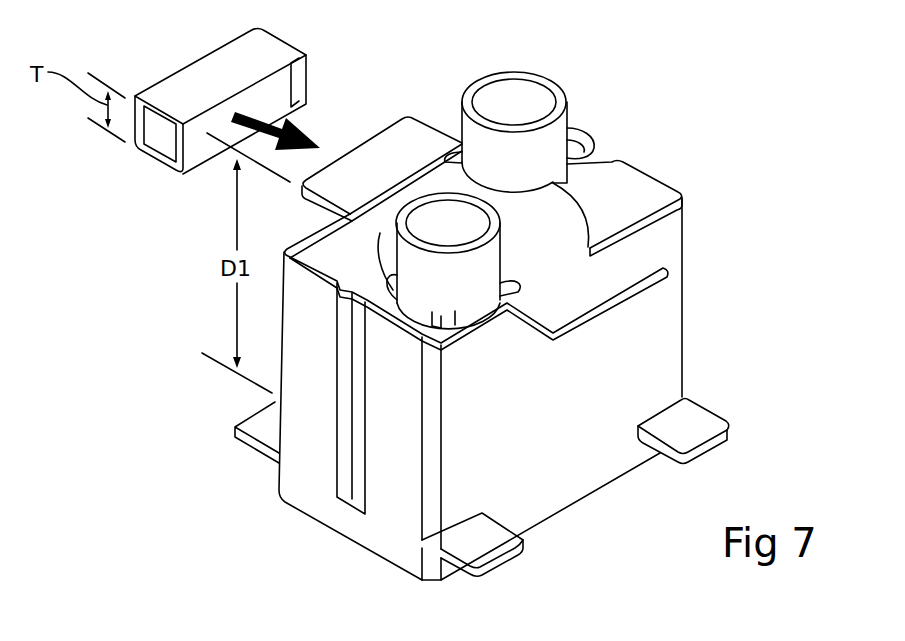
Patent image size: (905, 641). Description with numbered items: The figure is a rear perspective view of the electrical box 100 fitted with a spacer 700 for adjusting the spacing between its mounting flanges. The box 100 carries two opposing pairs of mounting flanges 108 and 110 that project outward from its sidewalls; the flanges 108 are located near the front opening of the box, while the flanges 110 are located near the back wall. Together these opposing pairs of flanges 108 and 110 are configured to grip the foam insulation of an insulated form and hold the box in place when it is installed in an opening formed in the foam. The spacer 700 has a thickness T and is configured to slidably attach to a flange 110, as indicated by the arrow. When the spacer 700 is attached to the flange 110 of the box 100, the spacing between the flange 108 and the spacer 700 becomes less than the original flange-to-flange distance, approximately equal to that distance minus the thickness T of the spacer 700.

The spacer 700 is at (187, 78).
The electrical box 100 is at (350, 527).
The mounting flange 110 is at (408, 130).
The mounting flange 108 is at (233, 437).